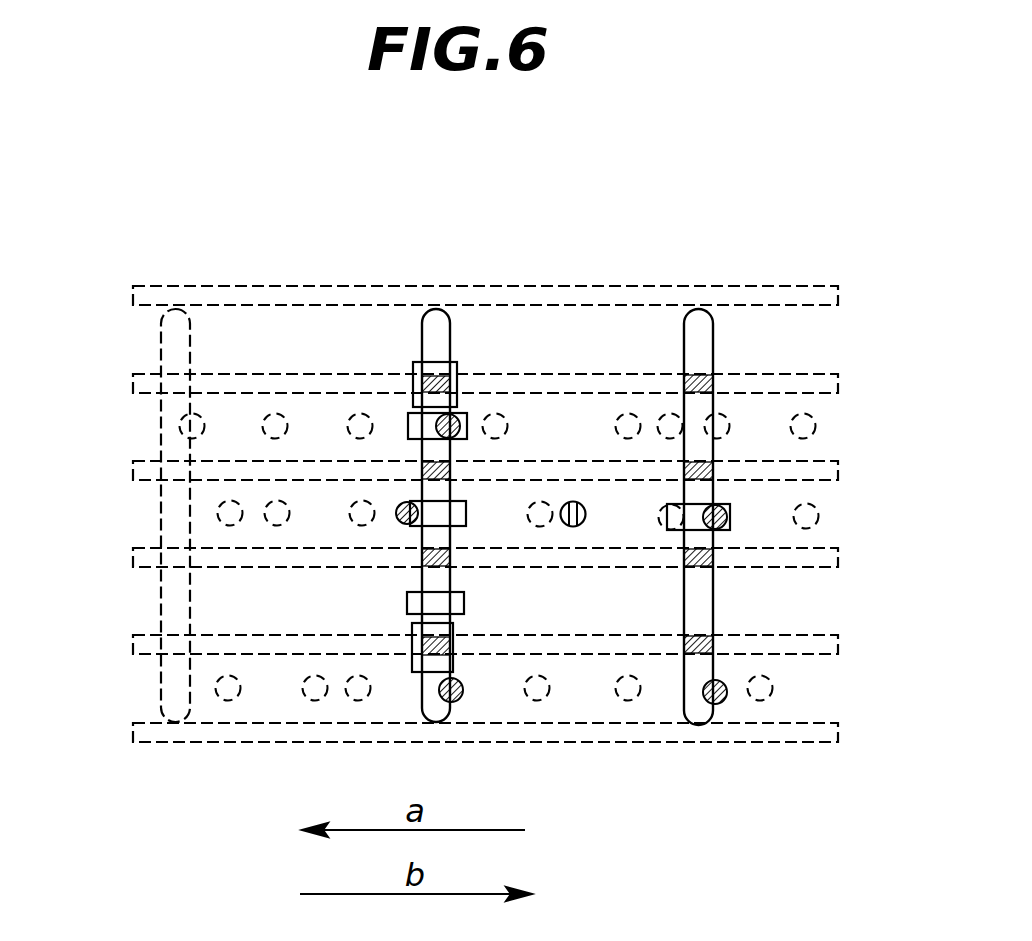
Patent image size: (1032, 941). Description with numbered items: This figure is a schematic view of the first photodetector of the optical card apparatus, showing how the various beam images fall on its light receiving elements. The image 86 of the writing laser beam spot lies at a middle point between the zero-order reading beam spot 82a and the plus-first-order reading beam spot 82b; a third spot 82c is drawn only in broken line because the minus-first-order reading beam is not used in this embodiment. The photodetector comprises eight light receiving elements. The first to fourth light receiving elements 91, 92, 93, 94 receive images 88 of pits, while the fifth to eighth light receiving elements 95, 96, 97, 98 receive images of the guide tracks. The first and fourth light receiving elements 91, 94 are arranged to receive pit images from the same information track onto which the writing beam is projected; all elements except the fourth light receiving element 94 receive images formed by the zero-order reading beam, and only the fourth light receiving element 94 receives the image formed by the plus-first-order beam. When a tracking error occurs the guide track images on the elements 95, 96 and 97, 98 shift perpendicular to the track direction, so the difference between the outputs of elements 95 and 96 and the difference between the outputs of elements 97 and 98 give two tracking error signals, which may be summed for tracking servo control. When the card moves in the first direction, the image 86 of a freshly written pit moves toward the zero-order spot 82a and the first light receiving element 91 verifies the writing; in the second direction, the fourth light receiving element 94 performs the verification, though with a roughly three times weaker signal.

The zero-order reading beam spot 82a is at (422, 690).
The +1-order reading beam spot 82b is at (712, 708).
The third strip (phantom) 82c is at (160, 690).
The image of the writing laser beam spot 86 is at (578, 526).
The images of pits 88 is at (540, 503).
The first light receiving element 91 is at (400, 513).
The second light receiving element 92 is at (408, 418).
The third light receiving element 93 is at (407, 602).
The fourth light receiving element 94 is at (730, 505).
The fifth light receiving element 95 is at (453, 363).
The sixth light receiving element 96 is at (458, 398).
The seventh light receiving element 97 is at (458, 628).
The eighth light receiving element 98 is at (455, 675).